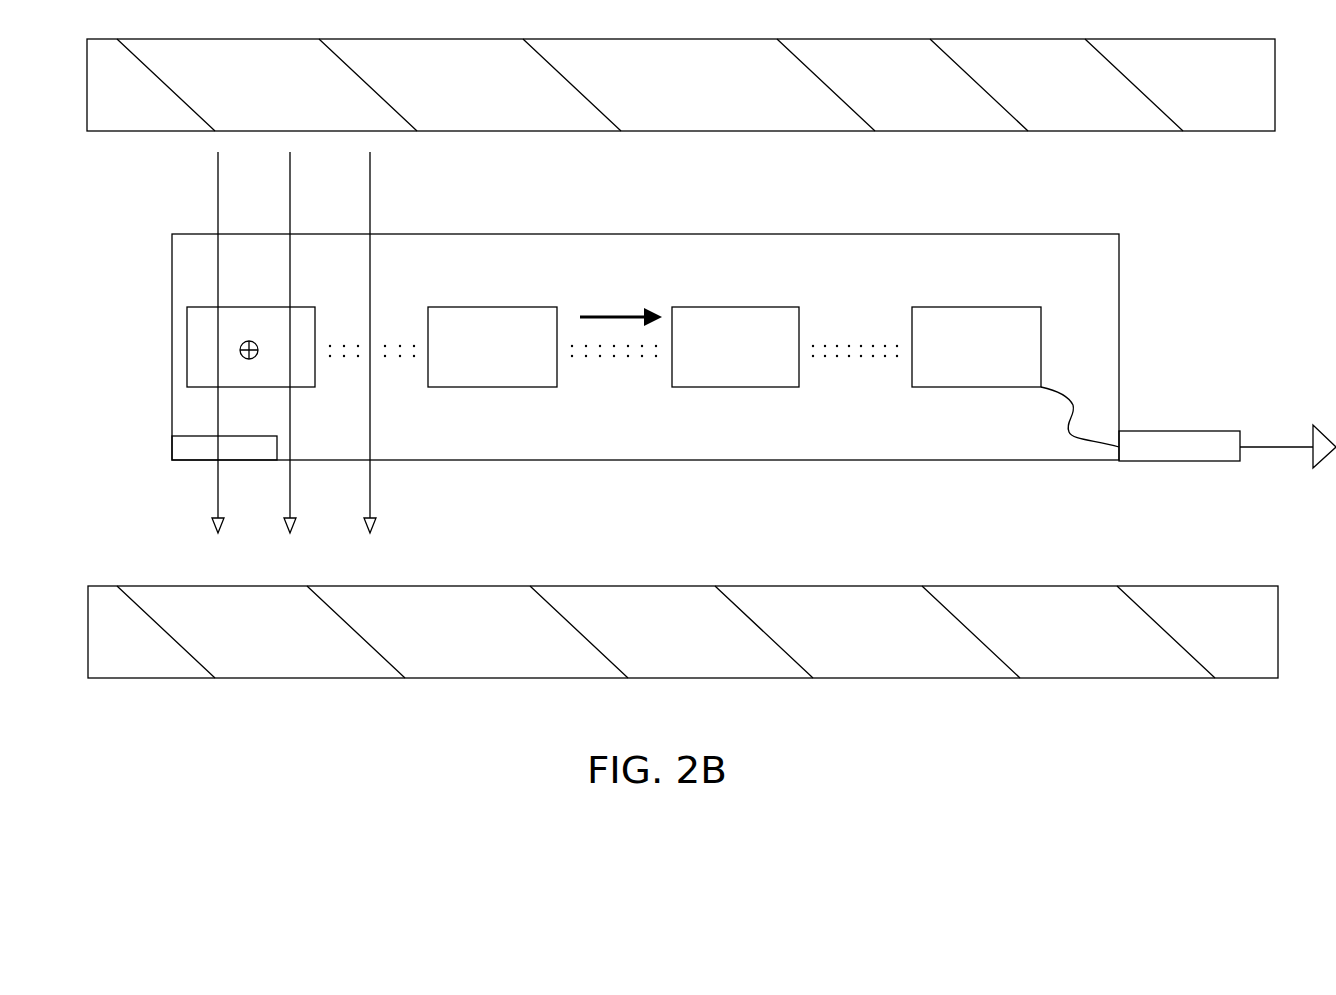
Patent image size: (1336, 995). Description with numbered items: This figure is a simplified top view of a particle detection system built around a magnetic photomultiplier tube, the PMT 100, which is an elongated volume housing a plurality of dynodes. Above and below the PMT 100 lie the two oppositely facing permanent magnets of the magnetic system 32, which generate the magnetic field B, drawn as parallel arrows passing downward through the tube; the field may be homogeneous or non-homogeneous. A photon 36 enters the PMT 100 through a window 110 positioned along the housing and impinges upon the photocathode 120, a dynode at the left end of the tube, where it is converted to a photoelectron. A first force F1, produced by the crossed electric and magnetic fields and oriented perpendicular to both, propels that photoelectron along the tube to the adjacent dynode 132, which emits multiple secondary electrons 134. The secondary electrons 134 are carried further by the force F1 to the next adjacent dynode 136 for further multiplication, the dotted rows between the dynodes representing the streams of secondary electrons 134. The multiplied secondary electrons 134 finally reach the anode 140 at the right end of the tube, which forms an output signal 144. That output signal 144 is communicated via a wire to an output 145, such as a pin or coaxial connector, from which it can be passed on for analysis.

The magnetic system 32 is at (680, 85).
The PMT 100 is at (172, 355).
The photocathode 120 is at (199, 315).
The photon 36 is at (249, 357).
The dynode 132 is at (455, 325).
The dynode 136 is at (700, 325).
The secondary electrons 134 is at (858, 360).
The anode 140 is at (967, 320).
The window 110 is at (190, 462).
The output 145 is at (1240, 431).
The output signal 144 is at (1277, 447).
The magnetic field B is at (370, 493).
The first force F1 is at (621, 300).